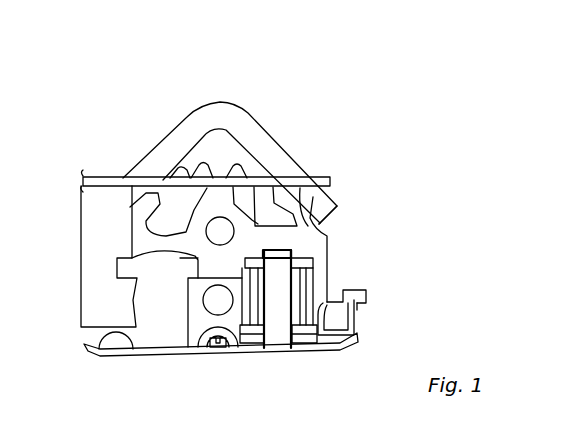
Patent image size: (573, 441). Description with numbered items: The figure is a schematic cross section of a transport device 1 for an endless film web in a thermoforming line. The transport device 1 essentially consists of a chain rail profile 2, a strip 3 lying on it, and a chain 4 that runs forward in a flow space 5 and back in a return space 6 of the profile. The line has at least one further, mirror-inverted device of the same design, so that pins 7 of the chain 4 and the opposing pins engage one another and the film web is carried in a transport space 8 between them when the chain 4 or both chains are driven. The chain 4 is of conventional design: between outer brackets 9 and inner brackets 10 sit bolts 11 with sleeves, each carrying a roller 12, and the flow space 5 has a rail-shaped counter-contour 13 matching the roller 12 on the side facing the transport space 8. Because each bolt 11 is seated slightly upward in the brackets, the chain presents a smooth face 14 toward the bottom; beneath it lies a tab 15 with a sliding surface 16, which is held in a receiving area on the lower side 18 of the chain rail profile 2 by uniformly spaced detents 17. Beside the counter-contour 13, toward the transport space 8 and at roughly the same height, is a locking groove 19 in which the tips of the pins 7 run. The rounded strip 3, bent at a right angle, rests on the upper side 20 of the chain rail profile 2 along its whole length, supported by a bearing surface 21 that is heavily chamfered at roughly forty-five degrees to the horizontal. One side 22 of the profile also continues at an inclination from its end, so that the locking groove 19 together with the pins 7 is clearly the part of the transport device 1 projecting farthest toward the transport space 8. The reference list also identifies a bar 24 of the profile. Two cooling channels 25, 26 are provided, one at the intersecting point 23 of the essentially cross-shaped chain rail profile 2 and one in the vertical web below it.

The transport device 1 is at (332, 73).
The chain rail profile 2 is at (236, 140).
The strip 3 is at (156, 157).
The chain 4 is at (322, 268).
The flow space 5 is at (300, 224).
The return space 6 is at (133, 258).
The pins 7 is at (357, 320).
The transport space 8 is at (480, 313).
The outer bracket 9 is at (258, 228).
The inner bracket 10 is at (345, 291).
The bolt 11 is at (280, 349).
The roller 12 is at (212, 302).
The counter-contour 13 is at (318, 284).
The face 14 is at (262, 360).
The tab 15 is at (118, 346).
The sliding surface 16 is at (90, 348).
The detents 17 is at (218, 354).
The lower side 18 is at (380, 416).
The locking groove 19 is at (367, 303).
The upper side 20 is at (196, 59).
The bearing surface 21 is at (250, 135).
The side 22 is at (316, 250).
The intersecting point 23 is at (214, 232).
The bar 24 is at (200, 300).
The cooling channel 25 is at (198, 257).
The cooling channel 26 is at (193, 279).